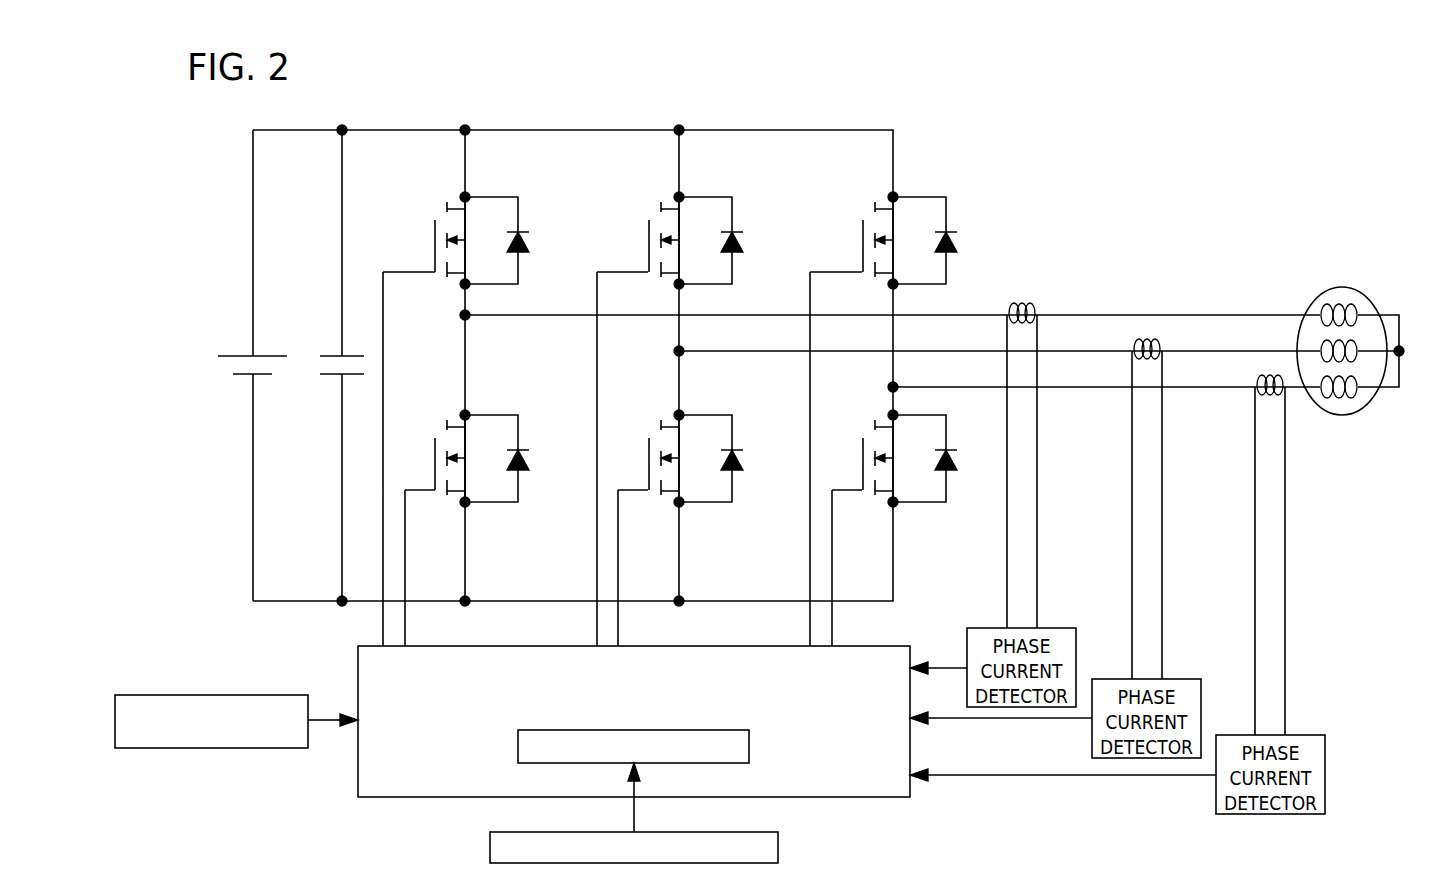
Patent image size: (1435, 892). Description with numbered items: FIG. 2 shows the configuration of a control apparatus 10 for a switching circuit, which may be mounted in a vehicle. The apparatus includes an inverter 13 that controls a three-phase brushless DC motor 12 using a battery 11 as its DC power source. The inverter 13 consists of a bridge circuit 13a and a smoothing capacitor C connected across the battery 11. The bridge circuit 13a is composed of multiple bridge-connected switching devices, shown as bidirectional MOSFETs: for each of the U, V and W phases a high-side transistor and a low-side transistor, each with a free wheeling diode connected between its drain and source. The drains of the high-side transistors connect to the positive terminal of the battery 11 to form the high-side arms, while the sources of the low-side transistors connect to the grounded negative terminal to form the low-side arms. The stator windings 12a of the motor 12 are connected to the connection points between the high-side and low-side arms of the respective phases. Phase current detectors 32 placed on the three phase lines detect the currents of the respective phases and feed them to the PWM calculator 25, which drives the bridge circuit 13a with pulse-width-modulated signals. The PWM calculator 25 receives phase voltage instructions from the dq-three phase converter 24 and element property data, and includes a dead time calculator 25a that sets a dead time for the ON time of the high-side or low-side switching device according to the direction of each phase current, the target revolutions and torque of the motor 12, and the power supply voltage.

The control apparatus 10 is at (1165, 62).
The battery 11 is at (237, 355).
The brushless DC motor 12 is at (1353, 288).
The stator windings 12a is at (1327, 379).
The inverter 13 is at (900, 85).
The bridge circuit 13a is at (725, 113).
The dq-three phase converter 24 is at (515, 832).
The PWM calculator 25 is at (868, 646).
The dead time calculator 25a is at (697, 731).
The phase current detectors 32 is at (1055, 628).
The smoothing capacitor C is at (338, 355).